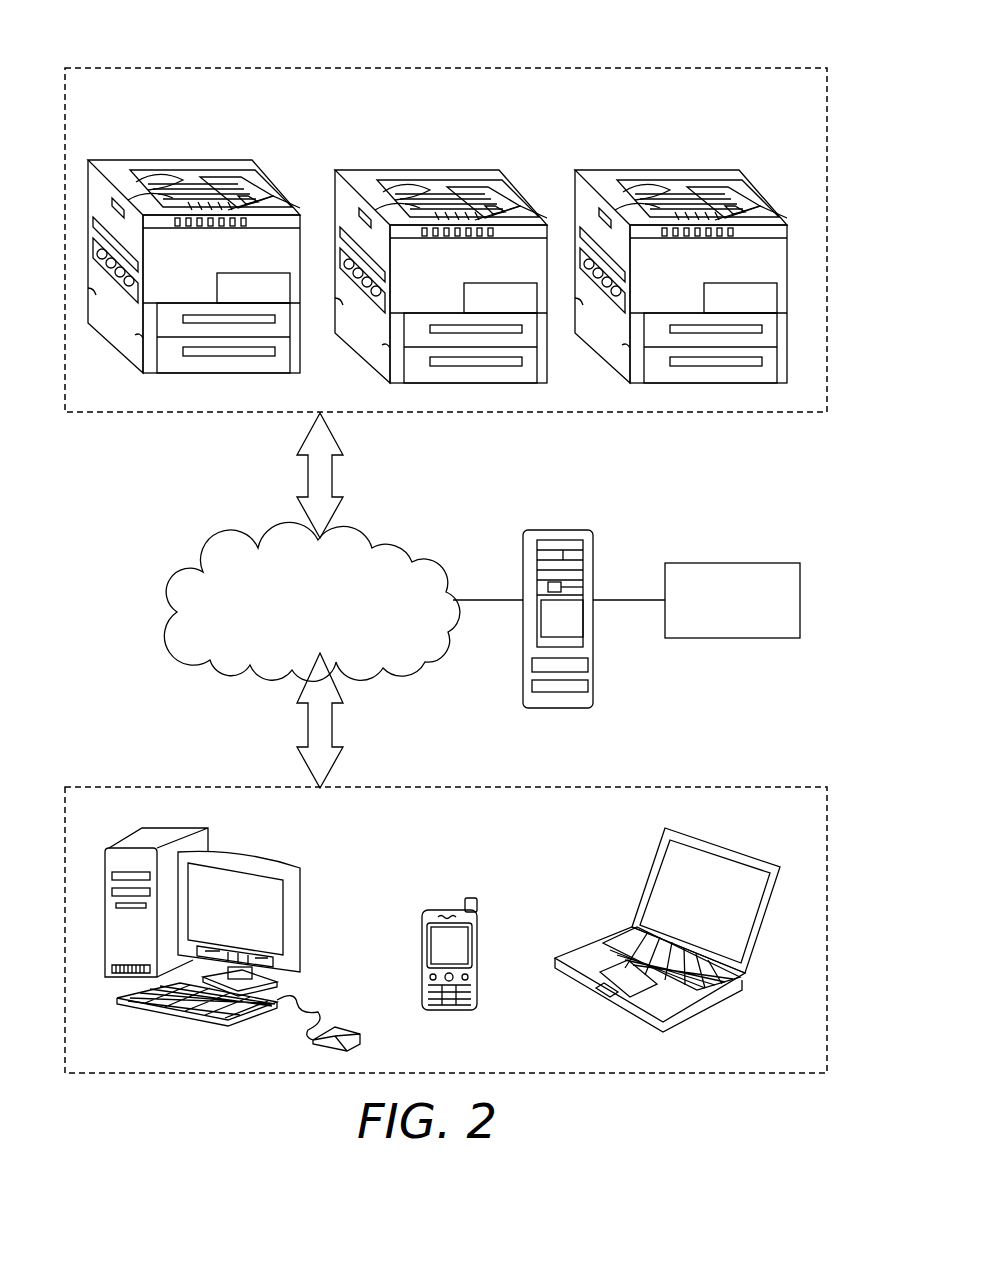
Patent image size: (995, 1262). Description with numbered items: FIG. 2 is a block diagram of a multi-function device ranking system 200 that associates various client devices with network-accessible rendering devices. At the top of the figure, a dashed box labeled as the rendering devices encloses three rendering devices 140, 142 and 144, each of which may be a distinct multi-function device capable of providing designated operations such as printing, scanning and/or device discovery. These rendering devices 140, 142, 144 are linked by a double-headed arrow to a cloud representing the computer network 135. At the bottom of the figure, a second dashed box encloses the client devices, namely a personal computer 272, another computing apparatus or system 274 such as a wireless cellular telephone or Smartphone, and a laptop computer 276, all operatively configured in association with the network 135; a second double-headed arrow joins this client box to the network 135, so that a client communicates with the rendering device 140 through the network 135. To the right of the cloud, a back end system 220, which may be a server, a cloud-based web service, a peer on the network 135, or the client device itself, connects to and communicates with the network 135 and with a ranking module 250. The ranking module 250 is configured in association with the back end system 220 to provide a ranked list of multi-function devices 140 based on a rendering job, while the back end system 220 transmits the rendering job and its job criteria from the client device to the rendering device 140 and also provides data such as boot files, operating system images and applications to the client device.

The multi-function device ranking system 200 is at (721, 58).
The rendering device 140 is at (230, 158).
The rendering device 142 is at (475, 170).
The rendering device 144 is at (715, 170).
The network 135 is at (432, 577).
The back end system 220 is at (568, 528).
The ranking module 250 is at (742, 562).
The personal computer 272 is at (247, 852).
The computing apparatus or system 274 is at (478, 927).
The laptop computer 276 is at (647, 865).